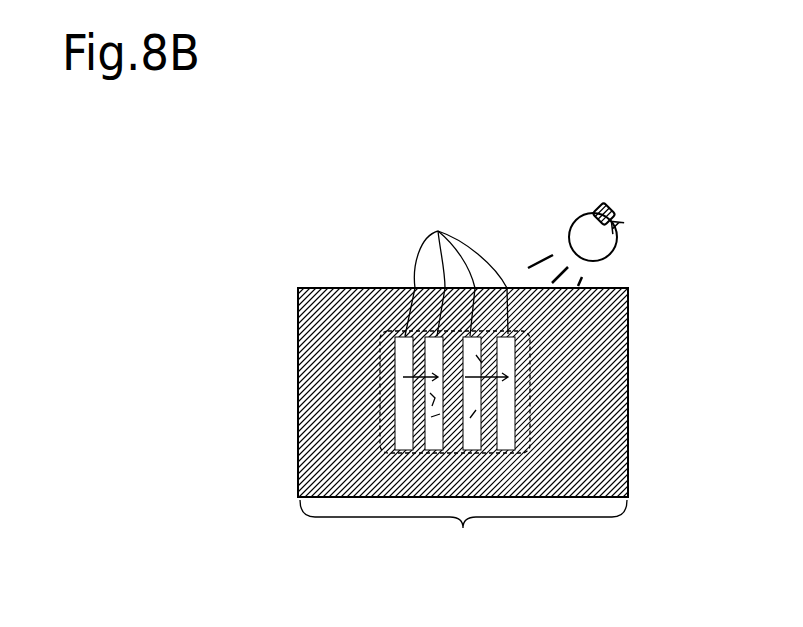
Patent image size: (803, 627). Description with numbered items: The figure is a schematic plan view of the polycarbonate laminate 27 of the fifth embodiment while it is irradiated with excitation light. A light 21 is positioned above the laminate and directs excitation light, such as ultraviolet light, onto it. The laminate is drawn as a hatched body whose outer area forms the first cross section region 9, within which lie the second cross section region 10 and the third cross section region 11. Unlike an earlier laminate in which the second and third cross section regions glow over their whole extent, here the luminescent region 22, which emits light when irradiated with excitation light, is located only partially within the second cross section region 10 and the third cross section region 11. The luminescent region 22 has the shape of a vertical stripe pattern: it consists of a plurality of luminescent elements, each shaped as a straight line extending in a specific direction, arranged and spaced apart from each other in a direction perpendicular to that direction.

The first cross section region 9 is at (298, 463).
The second cross section region 10 is at (343, 360).
The third cross section region 11 is at (420, 370).
The light 21 is at (566, 211).
The luminescent region 22 is at (455, 328).
The polycarbonate laminate 27 is at (463, 537).